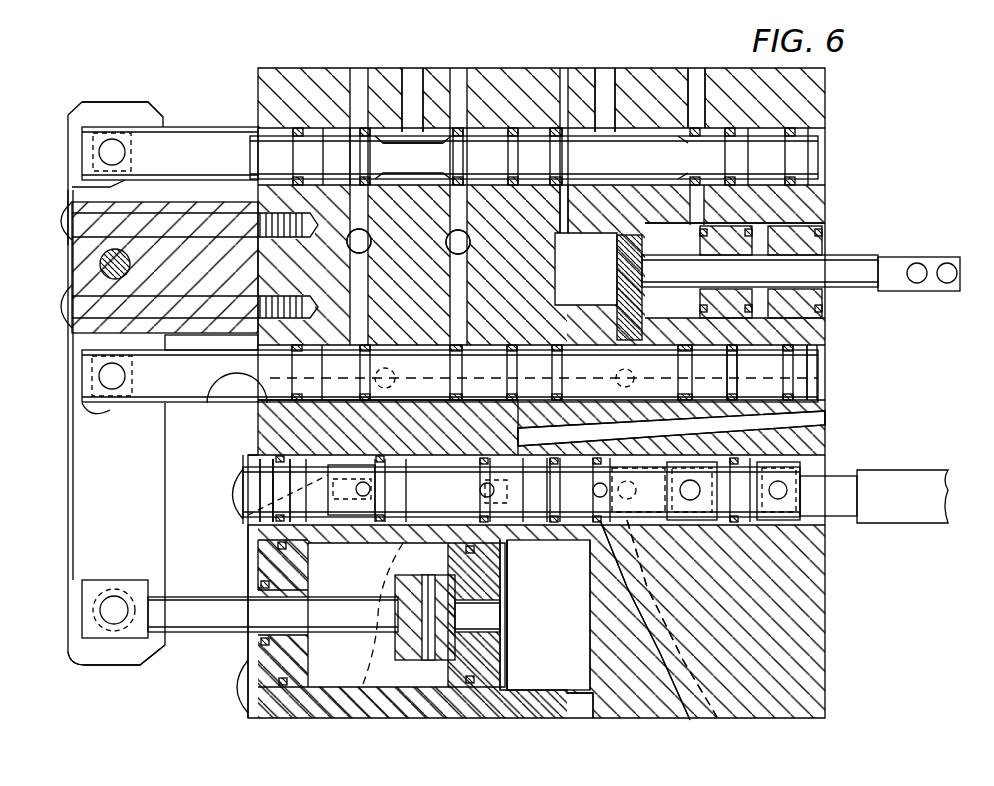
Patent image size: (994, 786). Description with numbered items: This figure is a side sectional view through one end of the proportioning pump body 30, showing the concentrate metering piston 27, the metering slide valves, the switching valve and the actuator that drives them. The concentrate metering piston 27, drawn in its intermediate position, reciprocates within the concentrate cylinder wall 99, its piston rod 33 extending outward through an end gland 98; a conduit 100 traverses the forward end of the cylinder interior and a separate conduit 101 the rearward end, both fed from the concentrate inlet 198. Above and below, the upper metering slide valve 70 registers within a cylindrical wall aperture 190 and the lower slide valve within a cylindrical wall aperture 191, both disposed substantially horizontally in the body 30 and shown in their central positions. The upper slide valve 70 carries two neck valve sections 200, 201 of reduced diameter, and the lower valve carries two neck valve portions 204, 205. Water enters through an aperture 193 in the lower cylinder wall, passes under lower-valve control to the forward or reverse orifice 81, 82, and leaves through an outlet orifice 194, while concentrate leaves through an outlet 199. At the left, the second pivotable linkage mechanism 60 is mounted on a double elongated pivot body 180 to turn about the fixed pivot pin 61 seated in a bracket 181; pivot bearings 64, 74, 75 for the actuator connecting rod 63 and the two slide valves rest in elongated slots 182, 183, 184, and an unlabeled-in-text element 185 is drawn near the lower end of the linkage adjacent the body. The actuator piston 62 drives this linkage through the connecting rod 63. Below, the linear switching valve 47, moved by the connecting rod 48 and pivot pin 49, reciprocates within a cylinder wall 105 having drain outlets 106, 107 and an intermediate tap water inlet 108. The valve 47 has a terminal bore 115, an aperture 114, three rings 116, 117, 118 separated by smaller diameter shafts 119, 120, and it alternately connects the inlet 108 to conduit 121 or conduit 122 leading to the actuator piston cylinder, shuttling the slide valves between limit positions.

The concentrate metering piston 27 is at (700, 342).
The pump body 30 is at (840, 90).
The piston rod 33 is at (835, 256).
The linear switching valve 47 is at (620, 527).
The connecting rod 48 is at (895, 523).
The pivot pin 49 is at (787, 487).
The second pivotable linkage mechanism 60 is at (68, 455).
The fixed pivot pin 61 is at (100, 262).
The actuator piston 62 is at (440, 687).
The connecting rod 63 is at (200, 632).
The pivot bearing 64 is at (112, 617).
The upper metering slide valve 70 is at (208, 127).
The pivot bearing 74 is at (110, 140).
The pivot bearing 75 is at (90, 378).
The forward orifice 81 is at (358, 230).
The reverse orifice 82 is at (462, 230).
The end gland 98 is at (783, 310).
The cylinder wall 99 is at (565, 225).
The conduit 100 is at (560, 213).
The conduit 101 is at (740, 348).
The cylinder wall 105 is at (690, 720).
The drain outlet 106 is at (368, 695).
The drain outlet 107 is at (720, 718).
The tap water inlet 108 is at (525, 545).
The aperture 114 is at (513, 530).
The terminal bore 115 is at (247, 517).
The ring 116 is at (243, 465).
The central ring 117 is at (530, 535).
The ring 118 is at (667, 530).
The smaller diameter shaft 119 is at (420, 438).
The smaller diameter shaft 120 is at (810, 430).
The conduit 121 is at (258, 540).
The conduit 122 is at (567, 540).
The double elongated pivot body 180 is at (63, 287).
The bracket 181 is at (70, 188).
The elongated slot 182 is at (130, 655).
The elongated slot 183 is at (125, 130).
The elongated slot 184 is at (108, 407).
The plate 185 is at (245, 650).
The cylindrical wall aperture 190 is at (345, 128).
The cylindrical wall aperture 191 is at (230, 395).
The aperture 193 is at (245, 398).
The outlet orifice 194 is at (412, 90).
The concentrate inlet 198 is at (820, 393).
The outlet 199 is at (610, 78).
The neck valve section 200 is at (432, 137).
The neck valve section 201 is at (650, 140).
The neck valve portion 204 is at (245, 348).
The neck valve portion 205 is at (735, 381).